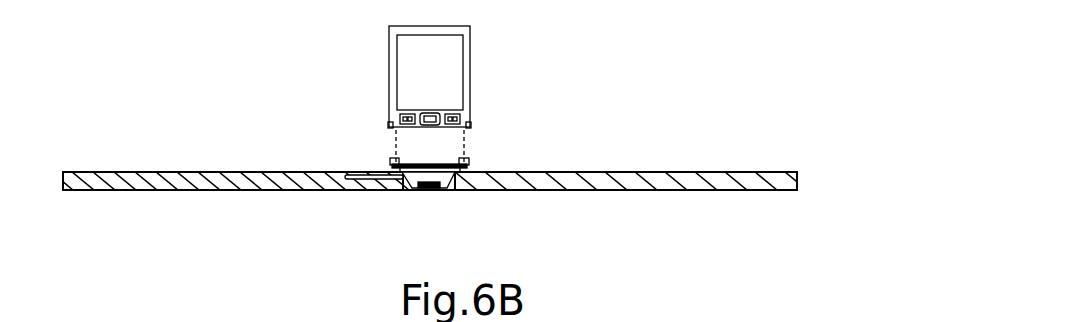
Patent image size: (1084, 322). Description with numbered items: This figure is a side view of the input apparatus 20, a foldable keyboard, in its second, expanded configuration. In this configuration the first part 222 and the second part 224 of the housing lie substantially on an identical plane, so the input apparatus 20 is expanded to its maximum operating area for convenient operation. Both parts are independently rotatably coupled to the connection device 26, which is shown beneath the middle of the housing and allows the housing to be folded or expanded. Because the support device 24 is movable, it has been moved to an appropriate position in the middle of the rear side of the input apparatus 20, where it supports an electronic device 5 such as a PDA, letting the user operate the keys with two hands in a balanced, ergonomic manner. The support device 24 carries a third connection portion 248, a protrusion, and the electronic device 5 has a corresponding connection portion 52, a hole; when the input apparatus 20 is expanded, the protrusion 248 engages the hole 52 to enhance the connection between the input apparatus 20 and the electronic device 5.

The electronic device 5 is at (432, 76).
The input apparatus 20 is at (418, 111).
The support device 24 is at (431, 186).
The connection device 26 is at (427, 172).
The connection portion 52 is at (391, 124).
The first part 222 is at (222, 185).
The second part 224 is at (623, 186).
The third connection portion 248 is at (496, 146).